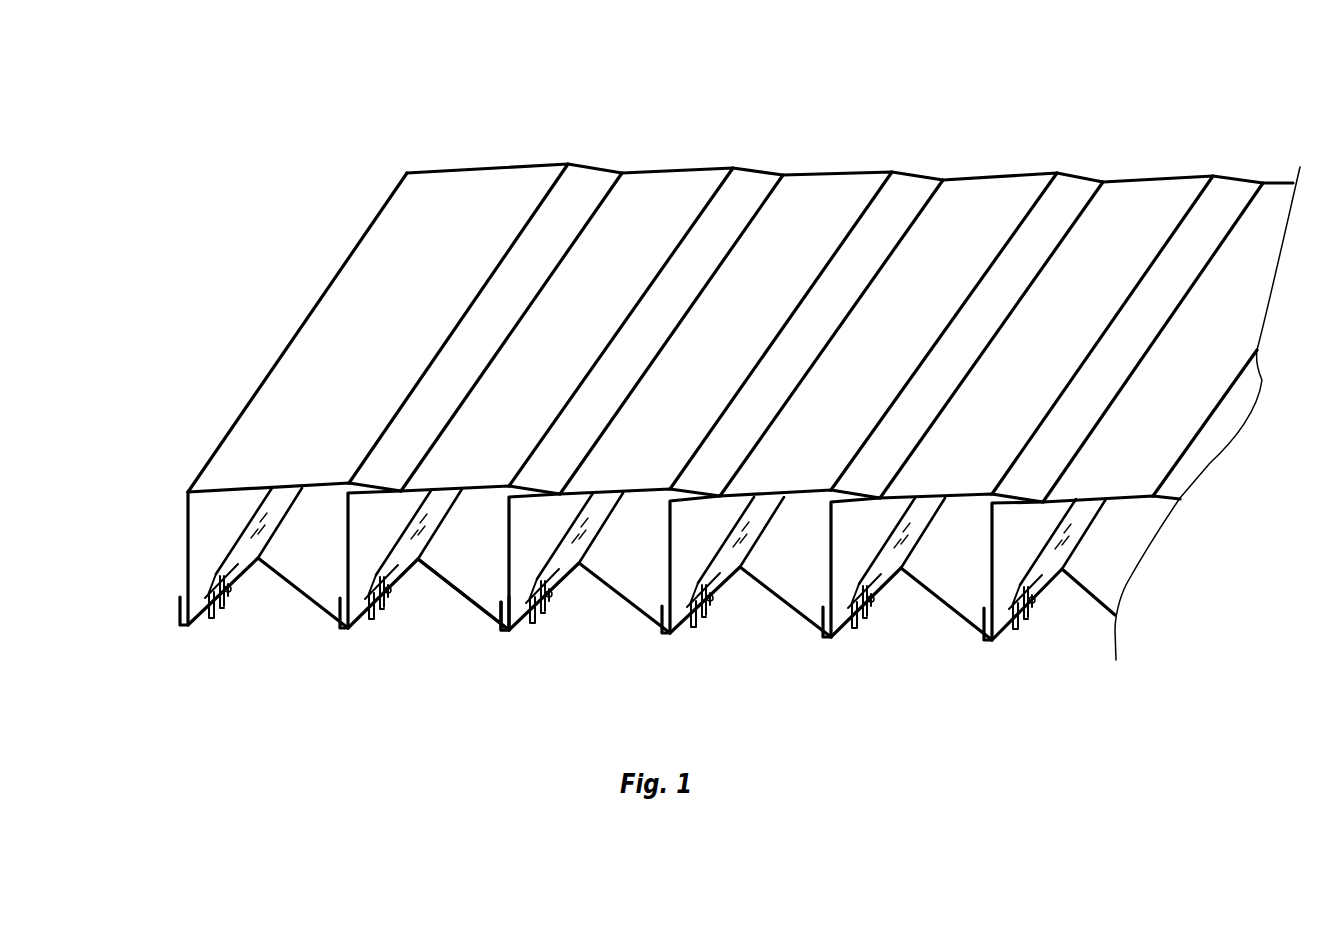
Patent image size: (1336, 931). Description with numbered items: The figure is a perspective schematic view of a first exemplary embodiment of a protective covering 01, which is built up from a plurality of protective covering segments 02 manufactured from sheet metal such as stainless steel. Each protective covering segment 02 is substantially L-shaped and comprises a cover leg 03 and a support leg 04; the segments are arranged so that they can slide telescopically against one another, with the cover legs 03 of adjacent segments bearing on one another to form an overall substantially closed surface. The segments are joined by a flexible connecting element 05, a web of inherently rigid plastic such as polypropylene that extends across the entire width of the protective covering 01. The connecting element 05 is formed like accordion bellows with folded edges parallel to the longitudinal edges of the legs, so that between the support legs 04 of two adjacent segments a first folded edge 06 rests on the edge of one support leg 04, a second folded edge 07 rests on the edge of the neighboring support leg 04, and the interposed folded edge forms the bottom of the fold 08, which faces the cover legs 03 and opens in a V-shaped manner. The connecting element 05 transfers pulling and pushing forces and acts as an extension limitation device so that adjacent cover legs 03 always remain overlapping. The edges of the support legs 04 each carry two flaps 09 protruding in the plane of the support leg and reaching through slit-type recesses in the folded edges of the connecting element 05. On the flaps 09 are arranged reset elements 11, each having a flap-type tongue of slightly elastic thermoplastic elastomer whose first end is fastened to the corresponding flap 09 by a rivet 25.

The protective covering 01 is at (1268, 100).
The protective covering segment 02 is at (485, 183).
The cover leg 03 is at (372, 352).
The support leg 04 is at (208, 522).
The connecting element 05 is at (423, 530).
The first folded edge 06 is at (363, 622).
The second folded edge 07 is at (512, 631).
The fold 08 is at (470, 573).
The flap 09 is at (215, 617).
The reset element 11 is at (700, 612).
The rivet 25 is at (867, 605).